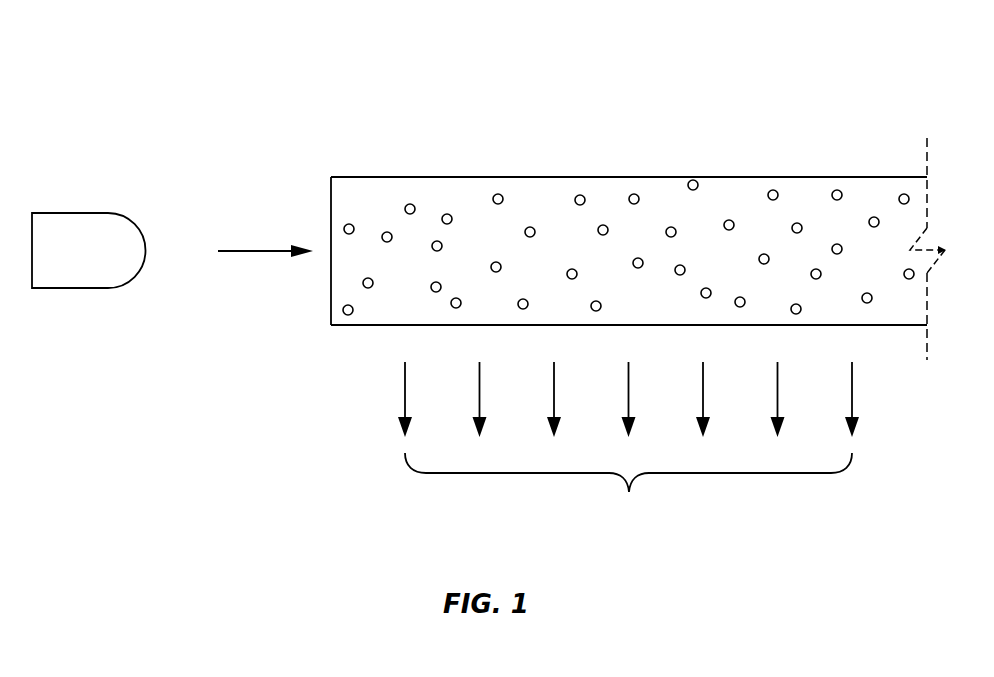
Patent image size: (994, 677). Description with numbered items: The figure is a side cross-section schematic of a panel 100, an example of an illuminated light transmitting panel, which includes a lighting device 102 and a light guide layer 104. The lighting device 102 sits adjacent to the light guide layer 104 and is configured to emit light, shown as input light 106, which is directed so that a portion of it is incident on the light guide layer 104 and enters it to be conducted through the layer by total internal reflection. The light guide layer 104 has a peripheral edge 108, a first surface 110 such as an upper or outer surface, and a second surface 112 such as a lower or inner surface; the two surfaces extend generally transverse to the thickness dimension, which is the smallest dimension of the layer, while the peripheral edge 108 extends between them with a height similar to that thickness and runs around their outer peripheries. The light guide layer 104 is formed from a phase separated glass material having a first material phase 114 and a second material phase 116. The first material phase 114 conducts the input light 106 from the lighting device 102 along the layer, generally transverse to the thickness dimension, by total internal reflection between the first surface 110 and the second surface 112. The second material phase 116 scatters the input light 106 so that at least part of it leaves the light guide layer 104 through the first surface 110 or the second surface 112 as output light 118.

The panel 100 is at (97, 79).
The lighting device 102 is at (71, 213).
The light guide layer 104 is at (603, 245).
The input light 106 is at (203, 261).
The peripheral edge 108 is at (331, 294).
The first surface 110 is at (631, 177).
The second surface 112 is at (346, 325).
The first material phase 114 is at (381, 204).
The second material phase 116 is at (501, 194).
The output light 118 is at (643, 521).